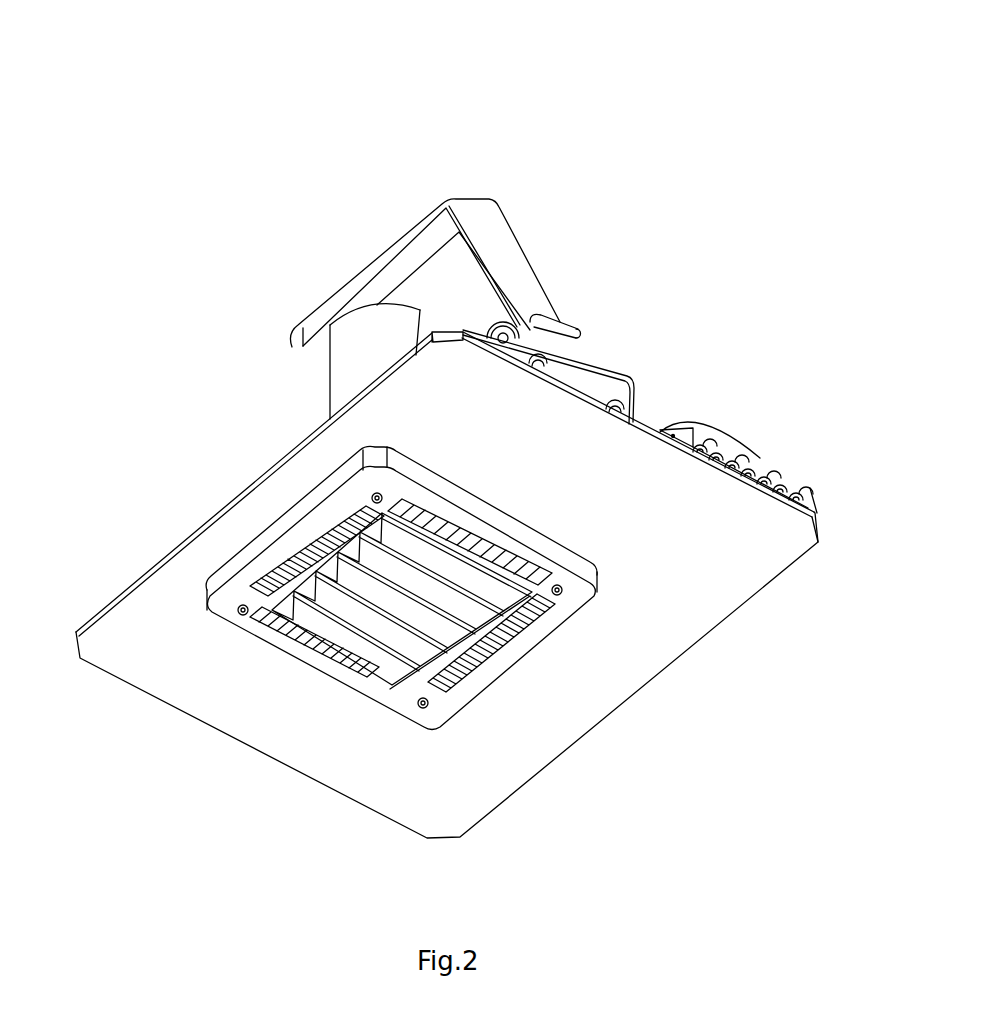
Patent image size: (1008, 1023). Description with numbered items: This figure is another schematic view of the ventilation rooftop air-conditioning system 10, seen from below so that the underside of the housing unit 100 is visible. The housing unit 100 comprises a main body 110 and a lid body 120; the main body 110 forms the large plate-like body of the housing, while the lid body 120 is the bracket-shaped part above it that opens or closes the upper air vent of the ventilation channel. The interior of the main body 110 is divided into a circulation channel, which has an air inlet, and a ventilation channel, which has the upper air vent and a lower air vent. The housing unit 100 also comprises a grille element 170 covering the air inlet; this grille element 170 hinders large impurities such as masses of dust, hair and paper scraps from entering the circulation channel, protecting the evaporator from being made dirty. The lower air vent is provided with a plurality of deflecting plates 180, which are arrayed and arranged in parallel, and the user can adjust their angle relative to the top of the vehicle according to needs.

The ventilation rooftop air-conditioning system 10 is at (497, 37).
The housing unit 100 is at (273, 458).
The main body 110 is at (565, 546).
The lid body 120 is at (507, 252).
The grille element 170 is at (546, 614).
The deflecting plates 180 is at (413, 667).